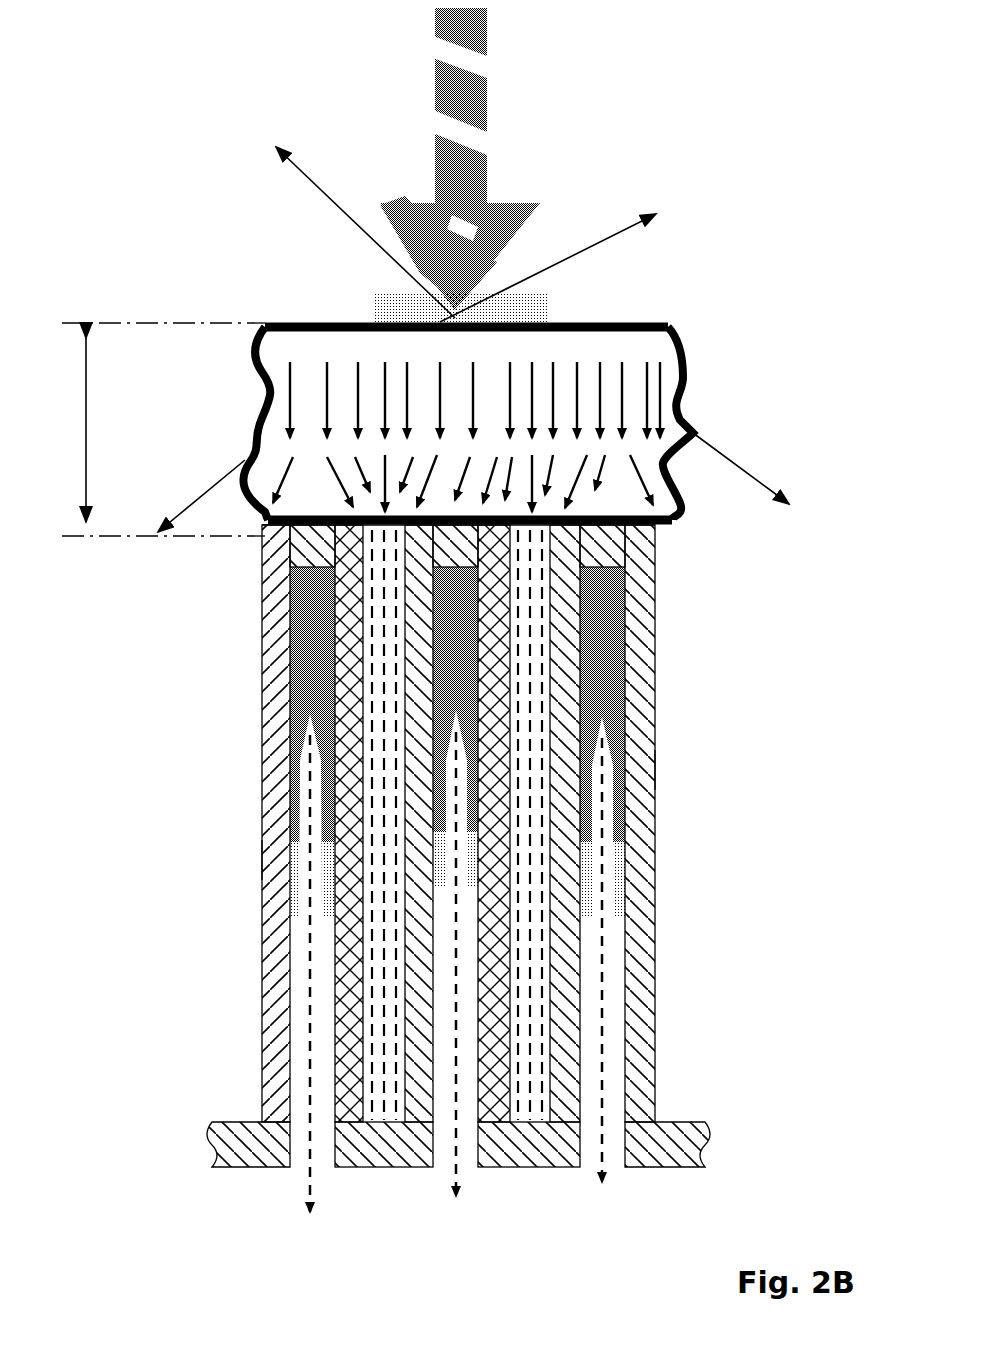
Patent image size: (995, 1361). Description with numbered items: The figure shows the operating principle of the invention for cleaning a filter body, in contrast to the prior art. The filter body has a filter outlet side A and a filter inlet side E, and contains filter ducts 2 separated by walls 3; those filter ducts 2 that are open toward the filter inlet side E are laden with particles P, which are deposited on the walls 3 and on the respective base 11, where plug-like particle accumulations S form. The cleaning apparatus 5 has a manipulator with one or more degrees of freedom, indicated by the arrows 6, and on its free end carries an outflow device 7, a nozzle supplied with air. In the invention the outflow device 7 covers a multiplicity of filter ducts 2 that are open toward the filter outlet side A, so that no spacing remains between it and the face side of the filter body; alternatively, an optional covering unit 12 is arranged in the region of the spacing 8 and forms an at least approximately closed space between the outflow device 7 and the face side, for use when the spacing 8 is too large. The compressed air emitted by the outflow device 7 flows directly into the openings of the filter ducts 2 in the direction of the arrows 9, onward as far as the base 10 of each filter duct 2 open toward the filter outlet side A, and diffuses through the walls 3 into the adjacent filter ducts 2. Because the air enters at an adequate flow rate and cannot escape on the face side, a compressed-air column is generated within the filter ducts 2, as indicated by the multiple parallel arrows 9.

The filter duct 2 is at (313, 1048).
The wall 3 is at (353, 960).
The cleaning apparatus 5 is at (620, 144).
The arrows 6 is at (320, 193).
The outflow device 7 is at (676, 290).
The spacing 8 is at (86, 447).
The arrows 9 is at (307, 1093).
The base 10 is at (397, 1125).
The base 11 is at (368, 567).
The covering unit 12 is at (688, 356).
The plug-like particle accumulations S is at (340, 655).
The particles P is at (265, 857).
The filter outlet side A is at (823, 518).
The filter inlet side E is at (760, 1175).